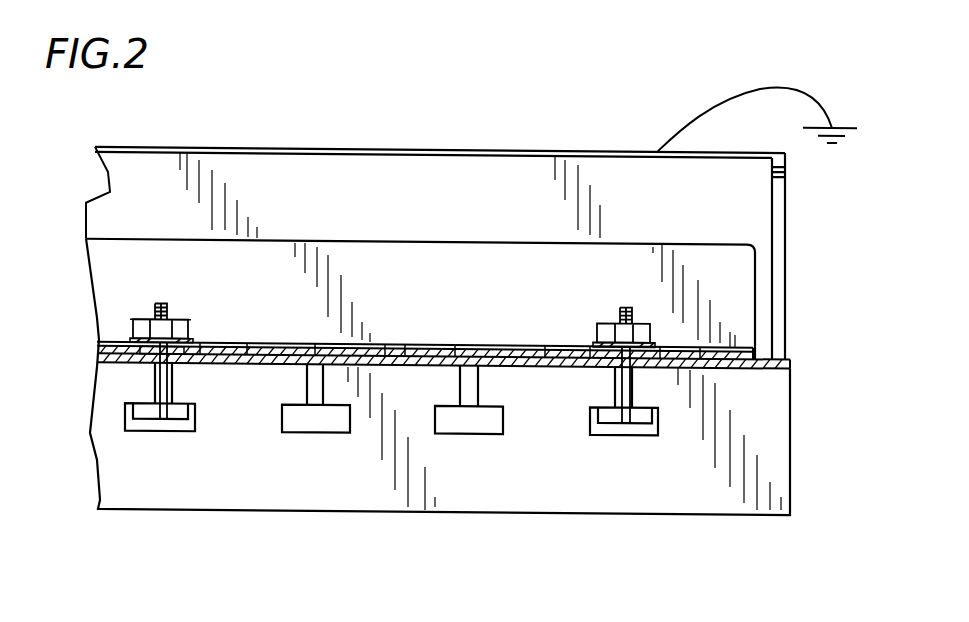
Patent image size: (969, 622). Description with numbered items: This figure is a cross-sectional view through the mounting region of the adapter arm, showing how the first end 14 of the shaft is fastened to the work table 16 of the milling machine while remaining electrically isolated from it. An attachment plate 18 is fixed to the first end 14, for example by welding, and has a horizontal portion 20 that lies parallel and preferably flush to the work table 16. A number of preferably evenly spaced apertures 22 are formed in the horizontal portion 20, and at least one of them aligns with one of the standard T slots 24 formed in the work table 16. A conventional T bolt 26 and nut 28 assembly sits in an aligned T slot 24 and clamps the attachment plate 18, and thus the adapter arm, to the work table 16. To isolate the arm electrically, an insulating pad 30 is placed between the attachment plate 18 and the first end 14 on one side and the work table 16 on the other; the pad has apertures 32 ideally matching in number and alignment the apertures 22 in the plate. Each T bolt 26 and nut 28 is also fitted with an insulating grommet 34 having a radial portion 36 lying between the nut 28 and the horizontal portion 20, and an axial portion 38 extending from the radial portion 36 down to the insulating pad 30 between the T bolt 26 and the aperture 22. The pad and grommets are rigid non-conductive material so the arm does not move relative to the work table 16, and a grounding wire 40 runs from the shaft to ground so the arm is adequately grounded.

The first end 14 is at (400, 199).
The work table 16 is at (471, 486).
The attachment plate 18 is at (757, 274).
The horizontal portion 20 is at (737, 340).
The apertures 22 is at (315, 337).
The T slots 24 is at (320, 429).
The T bolt 26 is at (153, 375).
The nut 28 is at (182, 316).
The insulating pad 30 is at (792, 356).
The apertures 32 is at (548, 335).
The insulating grommet 34 is at (128, 329).
The radial portion 36 is at (191, 338).
The axial portion 38 is at (180, 348).
The grounding wire 40 is at (777, 81).